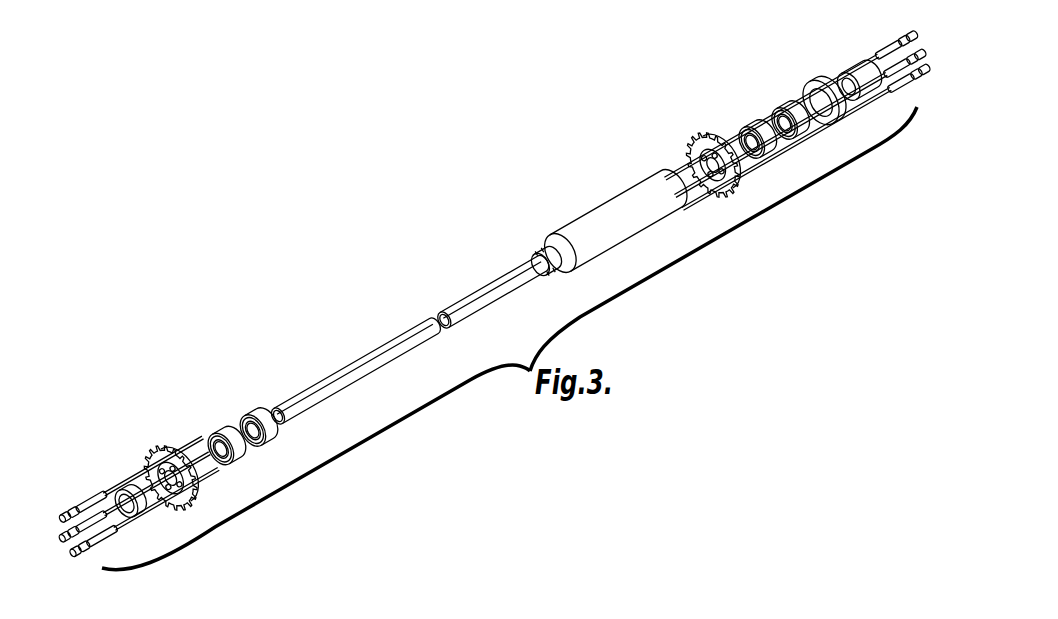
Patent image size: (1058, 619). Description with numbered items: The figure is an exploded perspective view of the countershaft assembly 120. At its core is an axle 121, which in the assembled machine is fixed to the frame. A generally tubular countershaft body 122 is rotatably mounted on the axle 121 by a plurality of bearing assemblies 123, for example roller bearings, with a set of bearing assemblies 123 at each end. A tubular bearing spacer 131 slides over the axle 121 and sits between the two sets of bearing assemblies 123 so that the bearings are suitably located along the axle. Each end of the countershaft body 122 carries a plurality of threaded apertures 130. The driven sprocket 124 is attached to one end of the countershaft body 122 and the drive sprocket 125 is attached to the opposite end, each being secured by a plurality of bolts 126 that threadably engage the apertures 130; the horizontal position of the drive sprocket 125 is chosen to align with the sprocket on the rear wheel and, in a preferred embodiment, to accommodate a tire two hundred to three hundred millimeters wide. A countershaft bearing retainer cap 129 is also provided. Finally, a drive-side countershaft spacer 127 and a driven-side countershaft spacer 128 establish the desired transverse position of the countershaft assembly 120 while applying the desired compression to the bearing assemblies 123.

The countershaft assembly 120 is at (425, 215).
The axle 121 is at (356, 363).
The countershaft body 122 is at (642, 184).
The bearing assemblies 123 is at (221, 435).
The driven sprocket 124 is at (708, 130).
The drive sprocket 125 is at (167, 447).
The bolts 126 is at (73, 507).
The drive-side countershaft spacer 127 is at (138, 484).
The driven-side countershaft spacer 128 is at (862, 71).
The countershaft bearing retainer cap 129 is at (826, 84).
The threaded apertures 130 is at (548, 235).
The tubular bearing spacer 131 is at (484, 290).